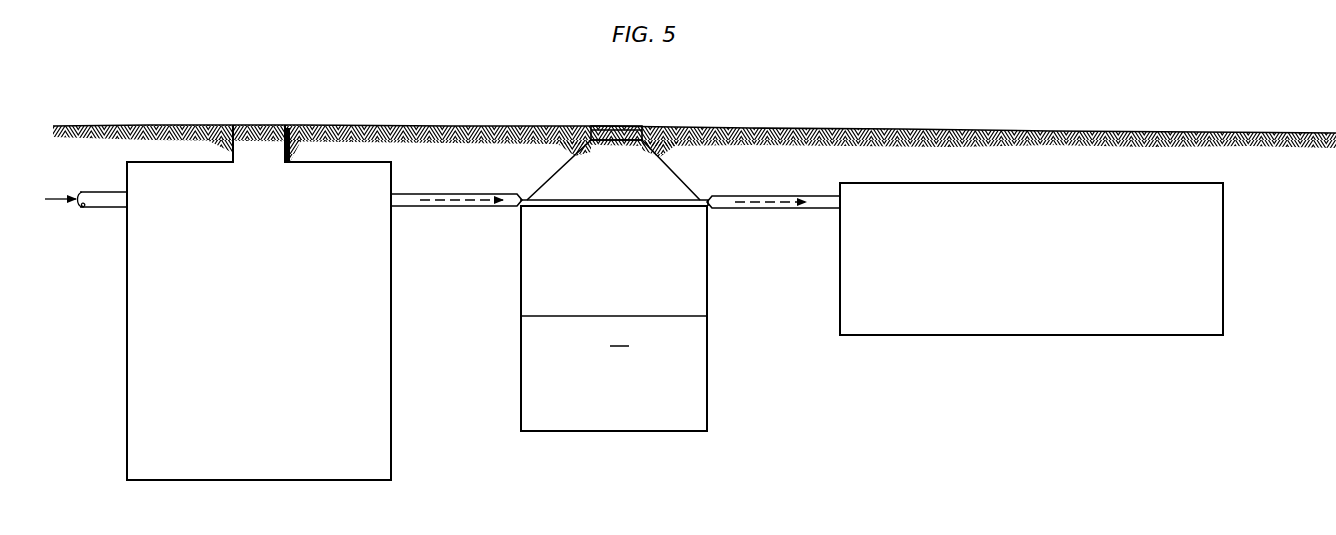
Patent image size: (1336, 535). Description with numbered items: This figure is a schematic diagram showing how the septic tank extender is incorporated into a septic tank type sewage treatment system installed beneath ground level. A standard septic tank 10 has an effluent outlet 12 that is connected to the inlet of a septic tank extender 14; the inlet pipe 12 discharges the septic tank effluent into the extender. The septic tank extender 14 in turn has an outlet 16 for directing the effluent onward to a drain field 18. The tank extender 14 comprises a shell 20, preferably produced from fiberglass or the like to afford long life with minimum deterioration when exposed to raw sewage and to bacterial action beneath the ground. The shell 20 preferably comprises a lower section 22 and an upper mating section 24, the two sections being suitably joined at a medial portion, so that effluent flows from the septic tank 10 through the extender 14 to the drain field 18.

The standard septic tank 10 is at (273, 340).
The effluent outlet 12 is at (451, 194).
The septic tank extender 14 is at (649, 278).
The outlet 16 is at (760, 196).
The drain field 18 is at (1046, 290).
The shell 20 is at (714, 356).
The lower section 22 is at (708, 393).
The upper mating section 24 is at (708, 235).